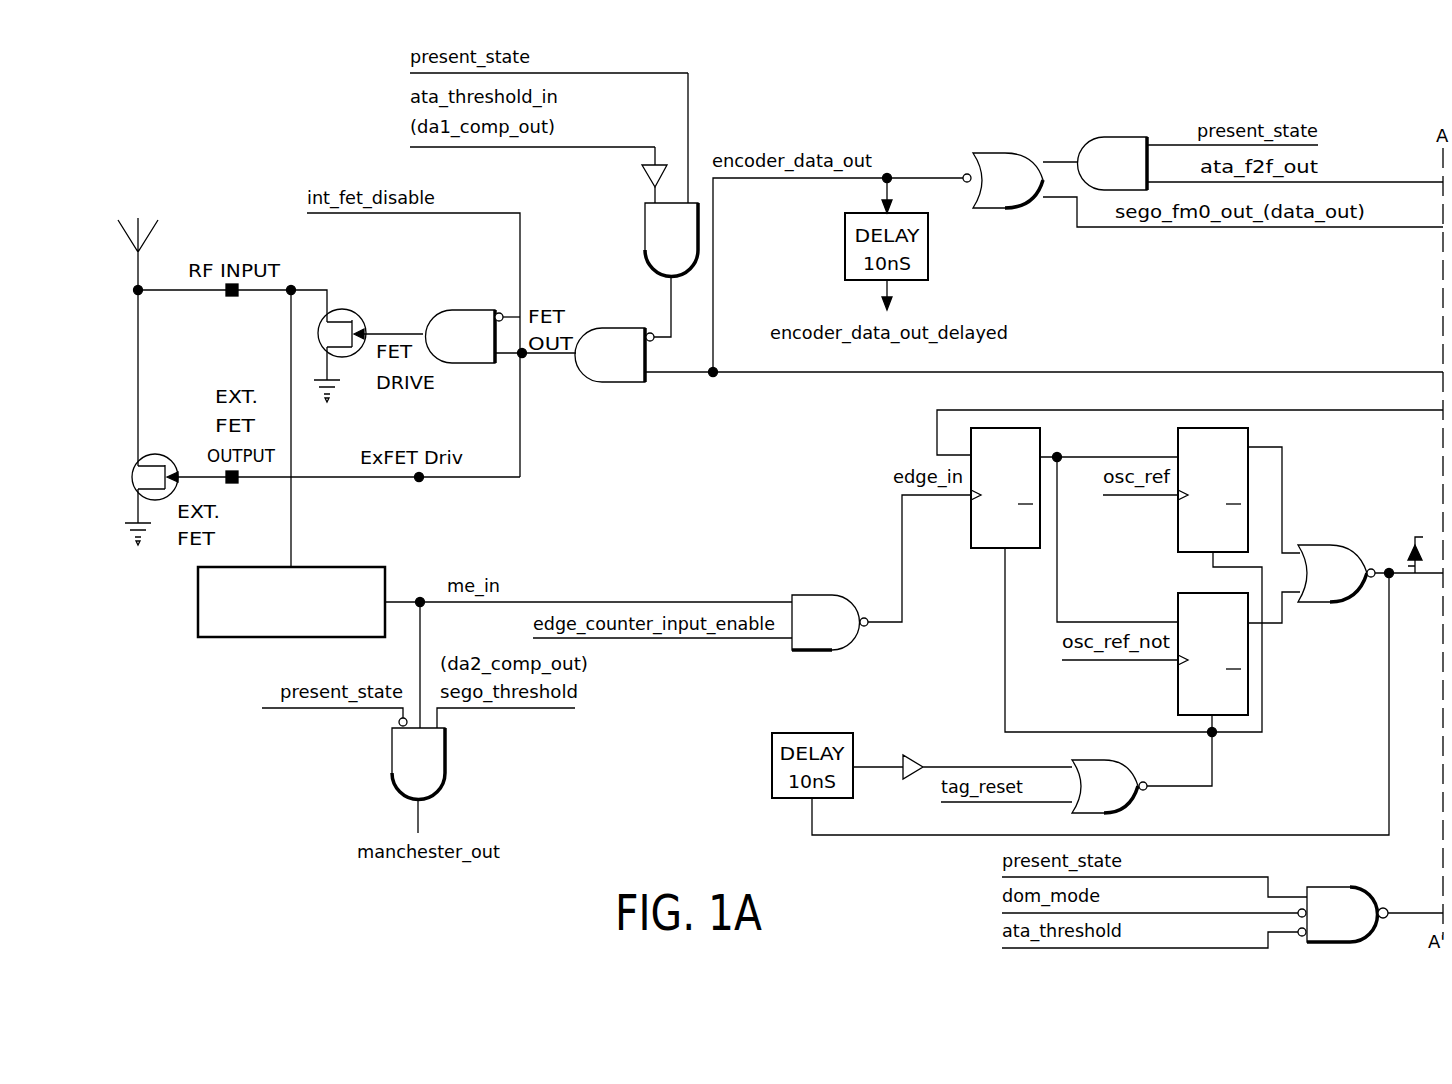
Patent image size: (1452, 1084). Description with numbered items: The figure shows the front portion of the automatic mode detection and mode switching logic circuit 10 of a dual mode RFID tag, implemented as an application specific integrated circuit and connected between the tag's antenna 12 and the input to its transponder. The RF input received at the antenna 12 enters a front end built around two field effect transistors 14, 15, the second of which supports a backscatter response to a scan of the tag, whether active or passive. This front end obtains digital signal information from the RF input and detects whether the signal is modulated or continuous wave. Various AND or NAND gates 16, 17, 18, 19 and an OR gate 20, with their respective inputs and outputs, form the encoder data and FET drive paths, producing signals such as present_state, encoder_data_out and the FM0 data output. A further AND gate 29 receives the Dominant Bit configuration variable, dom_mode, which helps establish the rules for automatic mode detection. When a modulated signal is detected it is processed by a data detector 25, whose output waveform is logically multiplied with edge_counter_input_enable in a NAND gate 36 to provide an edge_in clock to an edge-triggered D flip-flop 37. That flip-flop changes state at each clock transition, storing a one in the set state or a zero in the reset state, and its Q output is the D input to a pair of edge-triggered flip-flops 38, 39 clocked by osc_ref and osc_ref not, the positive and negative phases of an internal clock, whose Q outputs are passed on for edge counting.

The logic circuit 10 is at (200, 124).
The antenna 12 is at (152, 233).
The field effect transistor 14 is at (366, 318).
The field effect transistor 15 is at (163, 458).
The AND gate 16 is at (460, 310).
The AND gate 17 is at (604, 382).
The AND gate 18 is at (645, 242).
The AND gate 19 is at (1113, 137).
The OR gate 20 is at (1002, 153).
The data detector 25 is at (360, 567).
The AND gate 29 is at (1343, 899).
The NAND gate 36 is at (812, 595).
The edge-triggered D flip-flop 37 is at (975, 548).
The edge-triggered flip-flop 38 is at (1178, 545).
The edge-triggered flip-flop 39 is at (1178, 690).